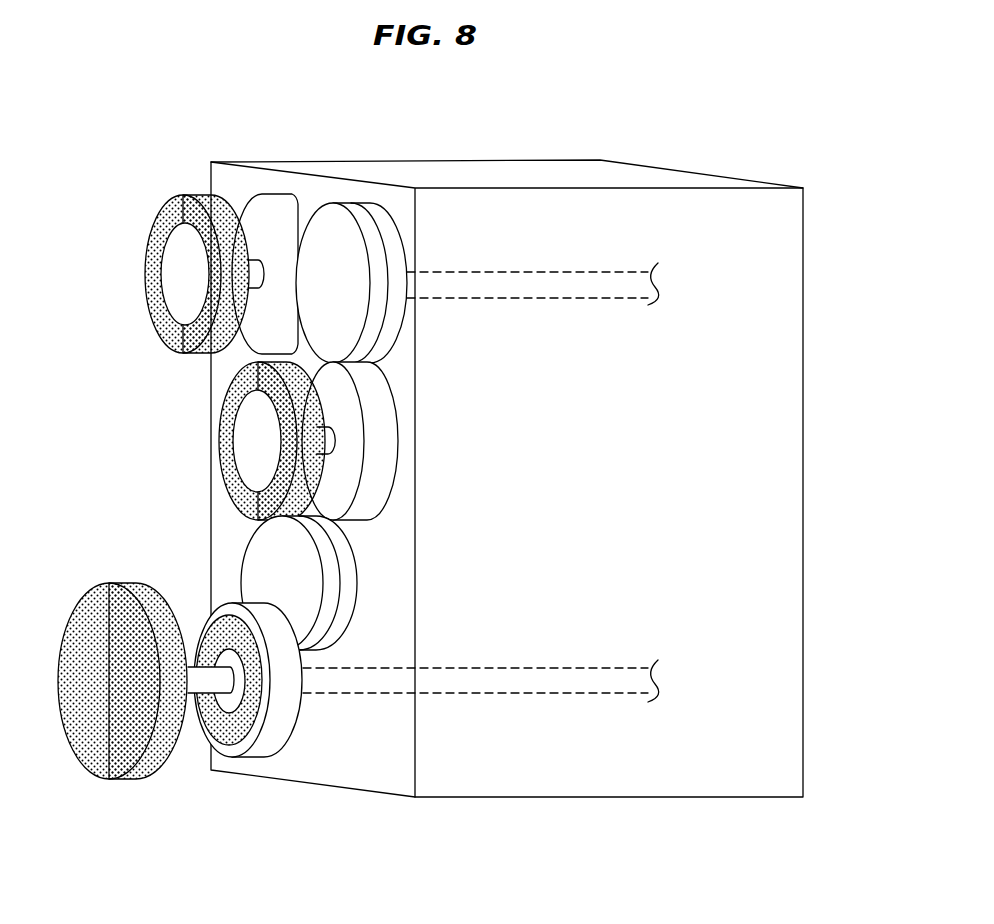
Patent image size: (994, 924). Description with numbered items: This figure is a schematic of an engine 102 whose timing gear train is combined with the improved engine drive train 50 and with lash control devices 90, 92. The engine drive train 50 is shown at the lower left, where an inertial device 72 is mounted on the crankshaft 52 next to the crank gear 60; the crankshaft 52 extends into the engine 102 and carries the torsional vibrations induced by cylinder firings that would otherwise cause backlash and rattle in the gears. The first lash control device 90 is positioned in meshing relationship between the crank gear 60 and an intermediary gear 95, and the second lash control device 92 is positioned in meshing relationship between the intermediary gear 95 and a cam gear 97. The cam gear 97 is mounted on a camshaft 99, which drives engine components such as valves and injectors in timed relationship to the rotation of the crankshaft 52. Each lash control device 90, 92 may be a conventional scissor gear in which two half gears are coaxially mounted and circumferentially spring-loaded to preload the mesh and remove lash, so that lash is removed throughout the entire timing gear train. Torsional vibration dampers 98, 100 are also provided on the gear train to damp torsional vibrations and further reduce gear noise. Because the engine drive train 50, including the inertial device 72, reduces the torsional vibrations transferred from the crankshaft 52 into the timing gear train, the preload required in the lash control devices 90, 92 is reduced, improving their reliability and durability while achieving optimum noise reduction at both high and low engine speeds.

The engine drive train 50 is at (140, 797).
The crankshaft 52 is at (495, 678).
The crank gear 60 is at (267, 742).
The inertial device 72 is at (87, 768).
The lash control device 90 is at (387, 235).
The lash control device 92 is at (359, 583).
The intermediary gear 95 is at (380, 462).
The cam gear 97 is at (257, 212).
The torsional vibration damper 98 is at (147, 275).
The camshaft 99 is at (520, 282).
The torsional vibration damper 100 is at (218, 438).
The engine 102 is at (805, 723).